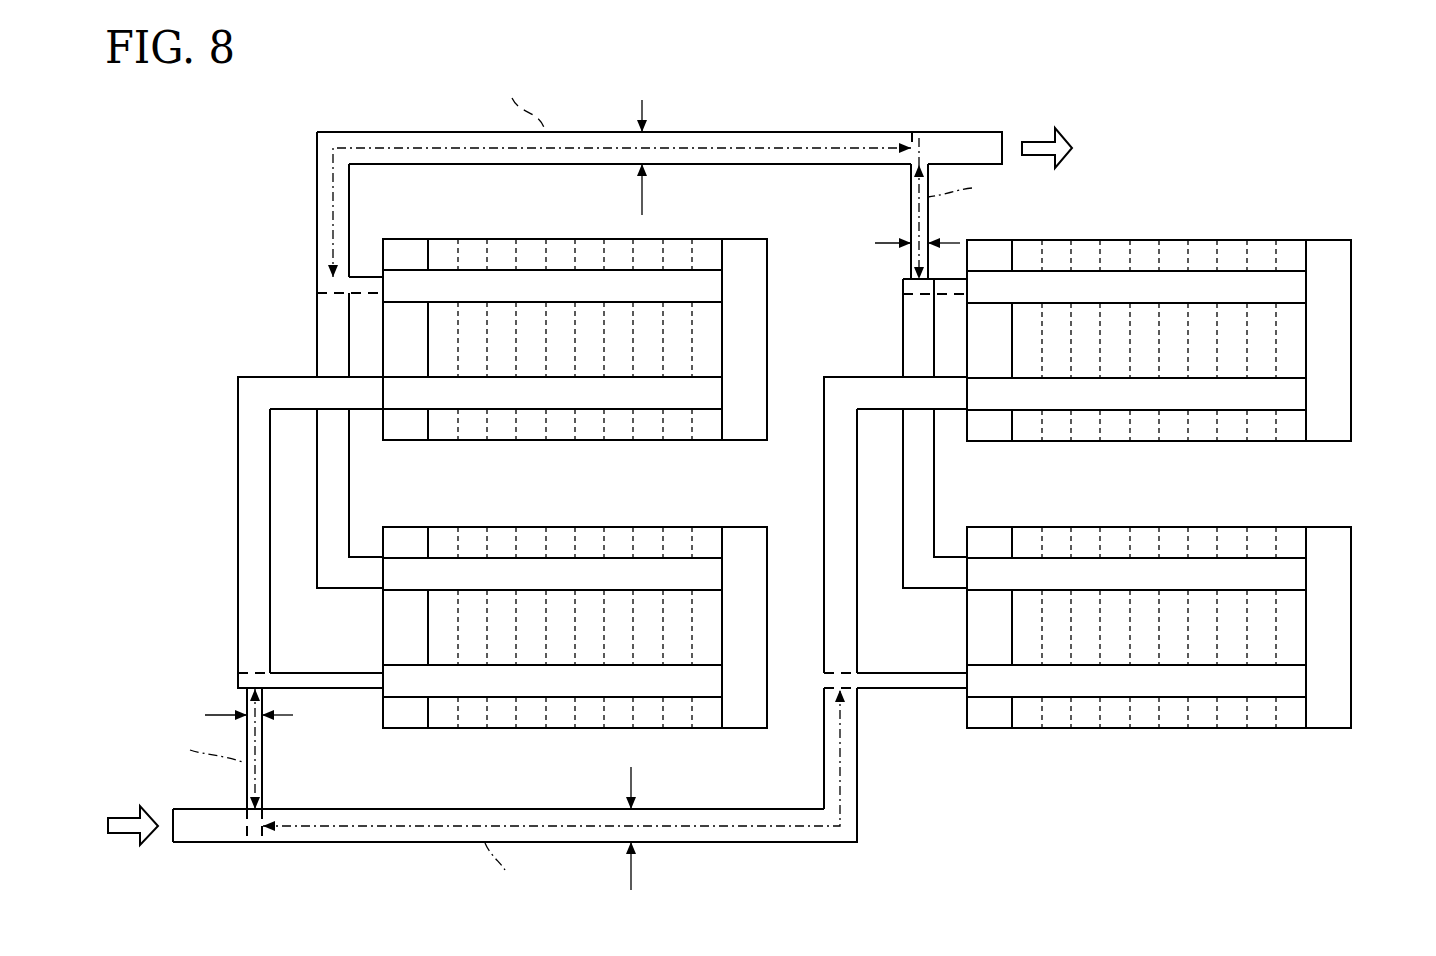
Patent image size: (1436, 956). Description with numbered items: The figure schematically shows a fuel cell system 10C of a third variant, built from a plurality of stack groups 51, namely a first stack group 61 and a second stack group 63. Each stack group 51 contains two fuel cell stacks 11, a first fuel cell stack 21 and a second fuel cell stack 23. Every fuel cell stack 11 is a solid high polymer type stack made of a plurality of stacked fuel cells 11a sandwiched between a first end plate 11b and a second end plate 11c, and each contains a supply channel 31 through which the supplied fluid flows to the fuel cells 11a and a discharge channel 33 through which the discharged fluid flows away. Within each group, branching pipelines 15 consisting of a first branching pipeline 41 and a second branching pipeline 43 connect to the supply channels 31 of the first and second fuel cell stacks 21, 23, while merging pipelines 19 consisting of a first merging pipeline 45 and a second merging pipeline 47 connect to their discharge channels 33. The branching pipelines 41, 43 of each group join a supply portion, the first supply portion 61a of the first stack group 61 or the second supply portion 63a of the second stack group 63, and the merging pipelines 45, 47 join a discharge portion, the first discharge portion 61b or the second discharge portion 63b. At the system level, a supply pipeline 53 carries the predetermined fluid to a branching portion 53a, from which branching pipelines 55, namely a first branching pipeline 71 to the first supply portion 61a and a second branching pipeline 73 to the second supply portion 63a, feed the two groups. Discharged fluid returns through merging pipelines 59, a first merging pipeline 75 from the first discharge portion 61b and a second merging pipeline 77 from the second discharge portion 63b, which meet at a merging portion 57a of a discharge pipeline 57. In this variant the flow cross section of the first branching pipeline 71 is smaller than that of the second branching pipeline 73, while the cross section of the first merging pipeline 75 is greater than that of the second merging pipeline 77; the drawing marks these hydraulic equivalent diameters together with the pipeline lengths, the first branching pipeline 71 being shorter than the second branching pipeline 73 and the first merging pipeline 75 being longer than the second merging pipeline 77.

The fuel cell system 10C is at (1152, 130).
The fuel cell stack 11 is at (904, 479).
The first fuel cell stack 21 is at (780, 492).
The second fuel cell stack 23 is at (782, 203).
The fuel cell 11a is at (470, 425).
The first end plate 11b is at (405, 425).
The second end plate 11c is at (740, 432).
The supply channel 31 is at (525, 400).
The discharge channel 33 is at (585, 280).
The branching pipeline 15 is at (606, 598).
The first branching pipeline 41 is at (320, 690).
The second branching pipeline 43 is at (255, 634).
The merging pipeline 19 is at (586, 327).
The first merging pipeline 45 is at (330, 350).
The second merging pipeline 47 is at (365, 297).
The stack group 51 is at (789, 236).
The first stack group 61 is at (707, 188).
The first supply portion 61a is at (262, 682).
The first discharge portion 61b is at (342, 284).
The second stack group 63 is at (1255, 200).
The second supply portion 63a is at (832, 678).
The second discharge portion 63b is at (917, 284).
The supply pipeline 53 is at (207, 843).
The branching portion 53a is at (262, 843).
The branching pipeline 55 is at (483, 797).
The first branching pipeline 71 is at (247, 790).
The second branching pipeline 73 is at (370, 843).
The discharge pipeline 57 is at (973, 132).
The merging portion 57a is at (912, 132).
The merging pipeline 59 is at (686, 159).
The first merging pipeline 75 is at (420, 130).
The second merging pipeline 77 is at (928, 217).